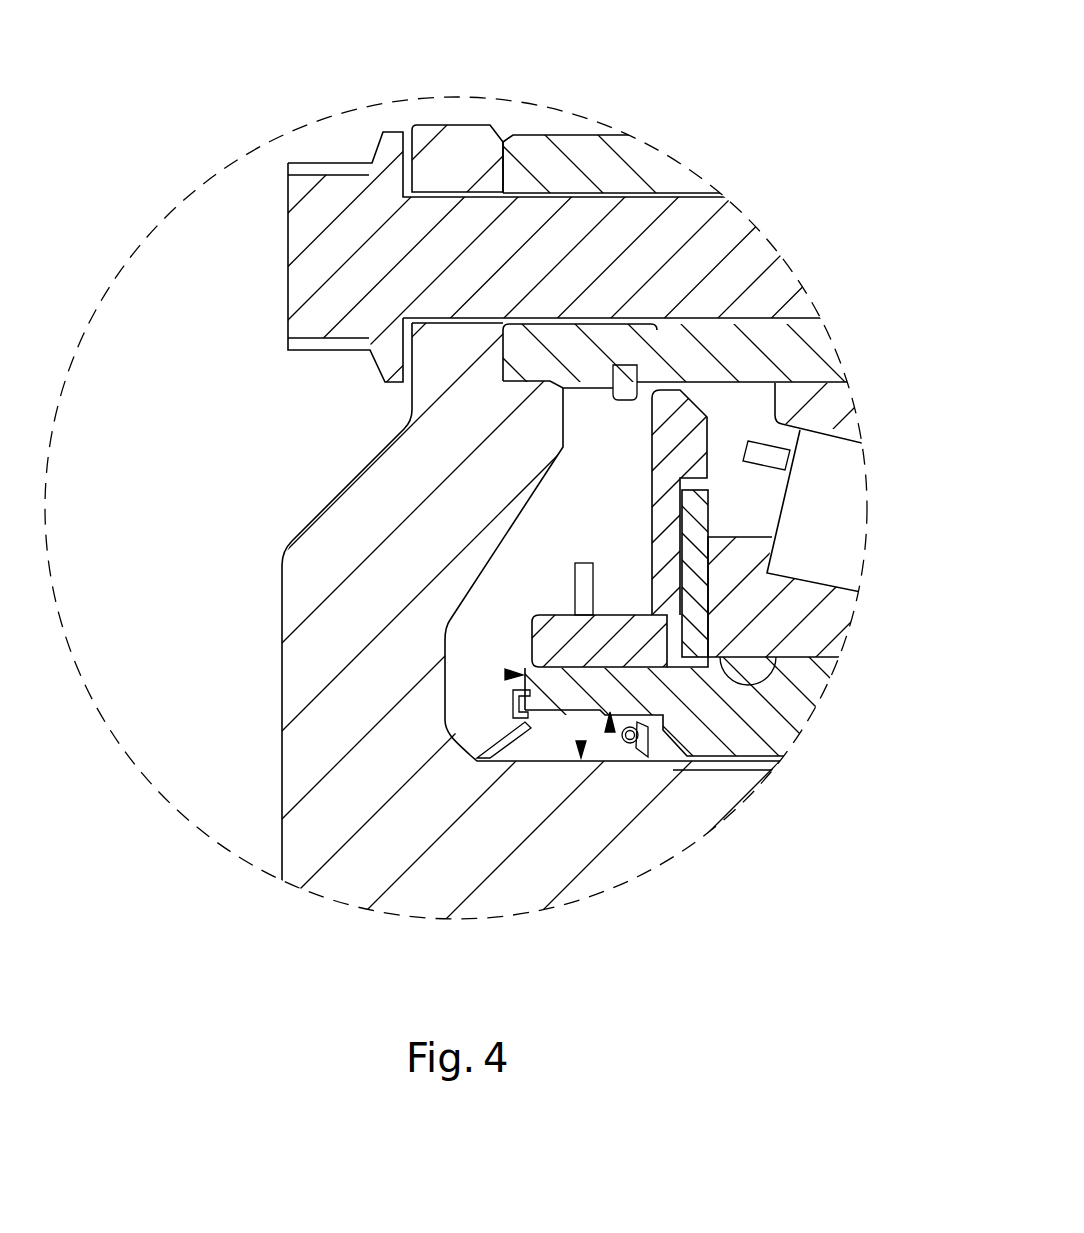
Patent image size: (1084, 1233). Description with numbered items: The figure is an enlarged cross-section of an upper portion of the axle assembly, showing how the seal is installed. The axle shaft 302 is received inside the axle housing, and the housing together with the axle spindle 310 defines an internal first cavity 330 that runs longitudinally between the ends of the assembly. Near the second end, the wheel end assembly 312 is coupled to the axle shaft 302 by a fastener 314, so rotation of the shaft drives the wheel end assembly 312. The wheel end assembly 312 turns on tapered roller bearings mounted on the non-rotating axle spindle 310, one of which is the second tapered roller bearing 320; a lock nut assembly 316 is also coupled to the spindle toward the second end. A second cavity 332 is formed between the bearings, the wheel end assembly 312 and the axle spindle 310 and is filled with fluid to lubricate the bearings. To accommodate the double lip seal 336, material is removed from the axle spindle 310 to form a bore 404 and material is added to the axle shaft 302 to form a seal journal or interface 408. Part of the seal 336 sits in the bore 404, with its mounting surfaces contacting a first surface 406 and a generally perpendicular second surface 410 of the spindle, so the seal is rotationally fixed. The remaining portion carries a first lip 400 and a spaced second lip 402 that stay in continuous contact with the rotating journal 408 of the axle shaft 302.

The axle shaft 302 is at (305, 582).
The axle spindle 310 is at (787, 708).
The wheel end assembly 312 is at (585, 153).
The fastener 314 is at (288, 228).
The lock nut assembly 316 is at (682, 433).
The second tapered roller bearing 320 is at (823, 513).
The first cavity 330 is at (763, 762).
The second cavity 332 is at (742, 417).
The double lip seal 336 is at (478, 714).
The first lip 400 is at (478, 757).
The second lip 402 is at (623, 742).
The bore 404 is at (660, 748).
The surface 406 is at (611, 733).
The seal journal or interface 408 is at (580, 742).
The second surface 410 is at (505, 674).